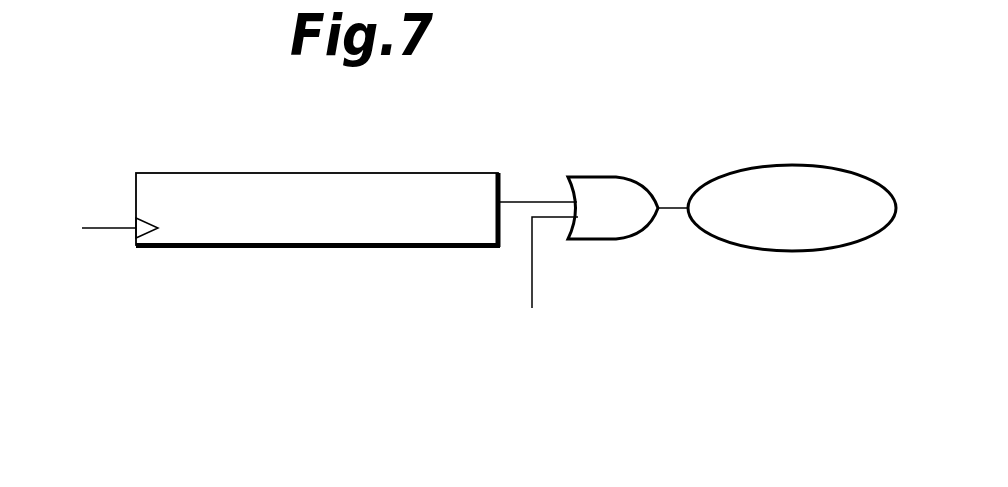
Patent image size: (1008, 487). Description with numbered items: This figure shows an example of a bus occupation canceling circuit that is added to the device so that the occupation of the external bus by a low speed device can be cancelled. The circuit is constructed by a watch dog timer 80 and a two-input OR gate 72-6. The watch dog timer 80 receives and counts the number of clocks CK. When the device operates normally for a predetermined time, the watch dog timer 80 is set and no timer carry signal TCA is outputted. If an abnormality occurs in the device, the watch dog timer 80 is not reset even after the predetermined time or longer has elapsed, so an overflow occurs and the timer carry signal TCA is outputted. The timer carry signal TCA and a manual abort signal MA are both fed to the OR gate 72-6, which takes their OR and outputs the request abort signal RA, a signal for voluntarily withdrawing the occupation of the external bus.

The watch dog timer 80 is at (352, 172).
The 2-input OR gate 72-6 is at (625, 176).
The clock CK is at (102, 230).
The timer carry signal TCA is at (538, 200).
The manual abort signal MA is at (545, 277).
The request abort signal RA is at (792, 208).